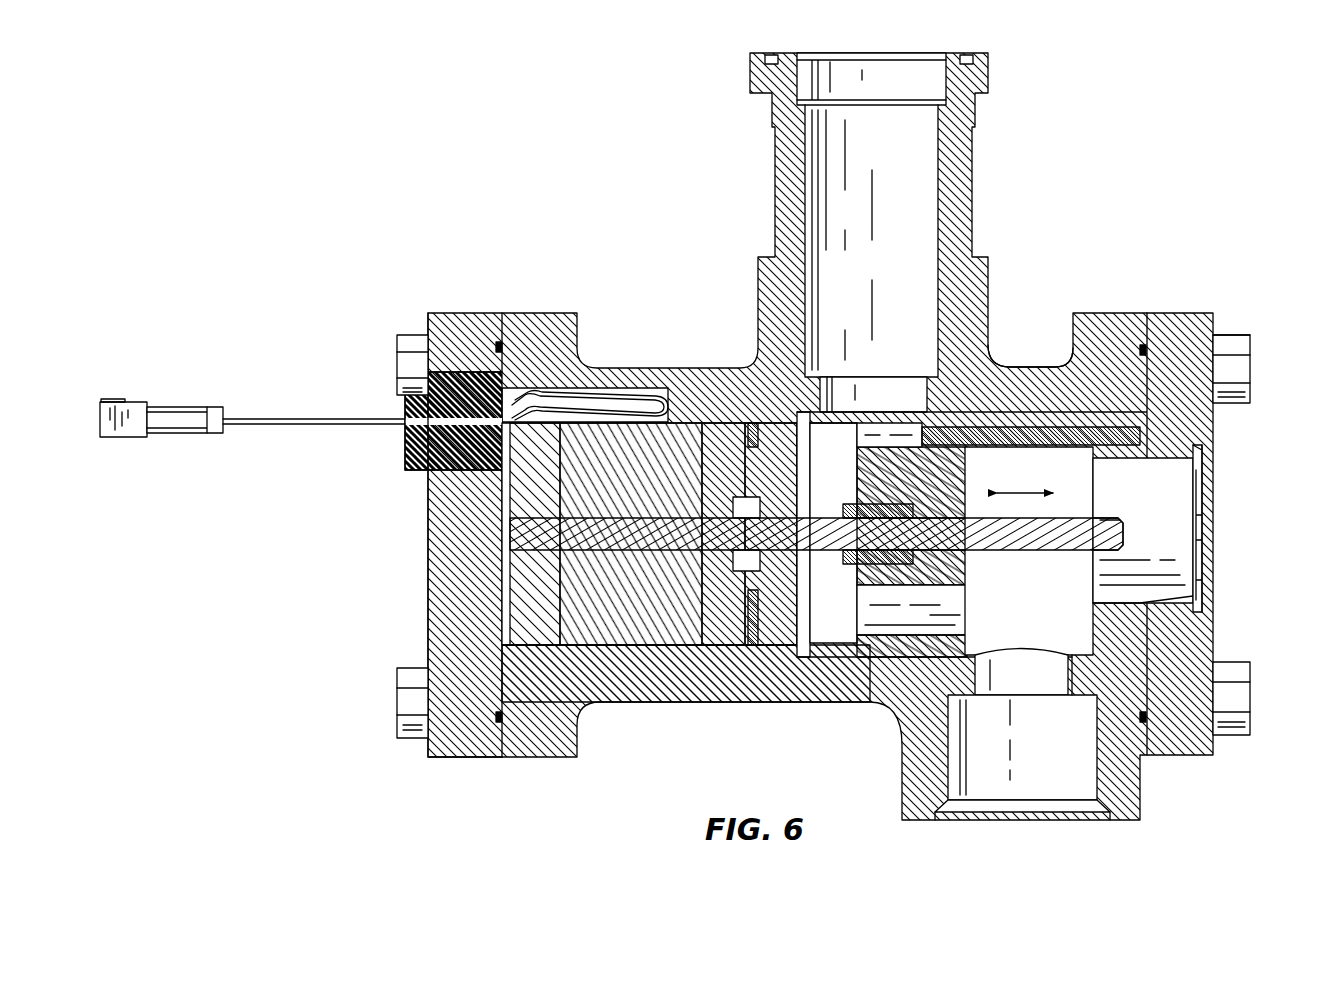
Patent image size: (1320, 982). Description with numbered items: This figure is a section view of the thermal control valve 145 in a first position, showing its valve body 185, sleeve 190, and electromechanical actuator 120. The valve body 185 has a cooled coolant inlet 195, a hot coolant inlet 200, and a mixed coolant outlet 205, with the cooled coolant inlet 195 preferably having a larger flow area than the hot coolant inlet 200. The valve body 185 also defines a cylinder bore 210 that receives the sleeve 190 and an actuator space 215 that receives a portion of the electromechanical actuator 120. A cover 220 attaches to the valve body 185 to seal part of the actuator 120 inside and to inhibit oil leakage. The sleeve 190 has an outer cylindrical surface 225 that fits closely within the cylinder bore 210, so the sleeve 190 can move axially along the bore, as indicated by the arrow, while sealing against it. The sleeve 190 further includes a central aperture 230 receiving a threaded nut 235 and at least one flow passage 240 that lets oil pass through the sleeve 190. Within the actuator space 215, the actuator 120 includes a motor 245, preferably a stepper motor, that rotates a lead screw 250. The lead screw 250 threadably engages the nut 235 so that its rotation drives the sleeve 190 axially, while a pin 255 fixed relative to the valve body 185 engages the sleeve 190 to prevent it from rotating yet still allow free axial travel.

The thermal control valve 145 is at (1122, 108).
The cooled coolant inlet 195 is at (908, 380).
The valve body 185 is at (1025, 367).
The cylinder bore 210 is at (1083, 420).
The actuator space 215 is at (633, 403).
The threaded nut 235 is at (762, 438).
The sleeve 190 is at (838, 478).
The cover 220 is at (430, 562).
The electromechanical actuator 120 is at (601, 649).
The motor 245 is at (668, 627).
The outer cylindrical surface 225 is at (870, 659).
The hot coolant inlet 200 is at (1068, 677).
The central aperture 230 is at (948, 522).
The flow passage 240 is at (940, 605).
The mixed coolant outlet 205 is at (1172, 458).
The pin 255 is at (1060, 460).
The lead screw 250 is at (1125, 527).